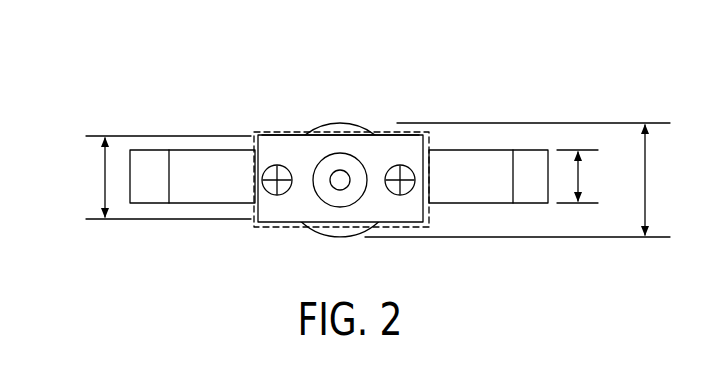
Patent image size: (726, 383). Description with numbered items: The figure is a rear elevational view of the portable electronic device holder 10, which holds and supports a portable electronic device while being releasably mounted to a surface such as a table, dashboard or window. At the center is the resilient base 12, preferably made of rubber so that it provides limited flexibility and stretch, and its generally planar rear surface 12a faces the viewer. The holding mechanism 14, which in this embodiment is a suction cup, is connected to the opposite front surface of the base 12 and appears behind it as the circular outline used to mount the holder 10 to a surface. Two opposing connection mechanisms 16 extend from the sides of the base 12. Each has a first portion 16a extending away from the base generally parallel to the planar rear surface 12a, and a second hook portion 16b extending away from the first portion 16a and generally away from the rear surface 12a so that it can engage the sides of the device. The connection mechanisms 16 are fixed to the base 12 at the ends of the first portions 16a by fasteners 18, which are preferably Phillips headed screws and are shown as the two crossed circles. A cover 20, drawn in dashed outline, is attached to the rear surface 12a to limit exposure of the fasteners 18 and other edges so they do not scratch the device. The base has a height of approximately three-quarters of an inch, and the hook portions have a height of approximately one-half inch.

The portable electronic device holder 10 is at (371, 152).
The resilient base 12 is at (339, 181).
The planar rear surface 12a is at (315, 136).
The holding mechanism 14 is at (356, 128).
The connection mechanism 16 is at (492, 215).
The first portion 16a is at (182, 193).
The second hook portion 16b is at (549, 152).
The fasteners 18 is at (280, 194).
The cover 20 is at (402, 130).